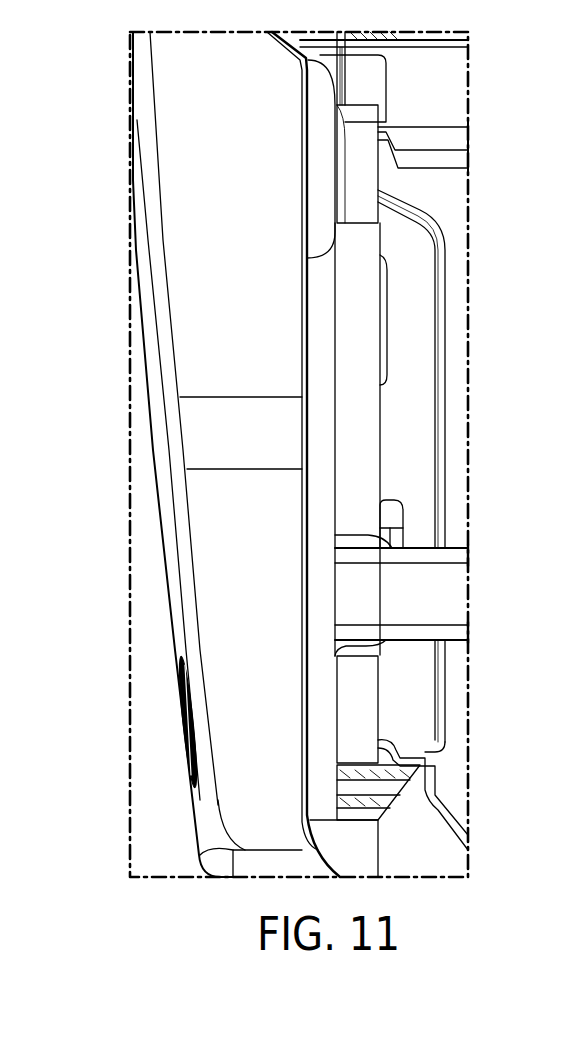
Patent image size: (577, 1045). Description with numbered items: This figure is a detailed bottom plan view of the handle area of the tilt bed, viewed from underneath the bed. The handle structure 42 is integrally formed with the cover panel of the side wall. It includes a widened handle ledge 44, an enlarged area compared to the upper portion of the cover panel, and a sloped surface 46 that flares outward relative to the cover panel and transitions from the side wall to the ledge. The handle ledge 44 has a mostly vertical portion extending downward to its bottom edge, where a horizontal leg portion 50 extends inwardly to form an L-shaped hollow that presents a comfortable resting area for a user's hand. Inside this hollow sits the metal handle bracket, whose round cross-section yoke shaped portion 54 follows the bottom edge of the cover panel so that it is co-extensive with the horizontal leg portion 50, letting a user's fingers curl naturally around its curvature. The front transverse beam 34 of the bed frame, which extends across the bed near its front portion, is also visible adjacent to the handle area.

The handle structure 42 is at (138, 412).
The handle ledge 44 is at (165, 437).
The sloped surface 46 is at (164, 507).
The horizontal leg portion 50 is at (262, 585).
The yoke shaped portion 54 is at (325, 475).
The front transverse beam 34 is at (435, 585).